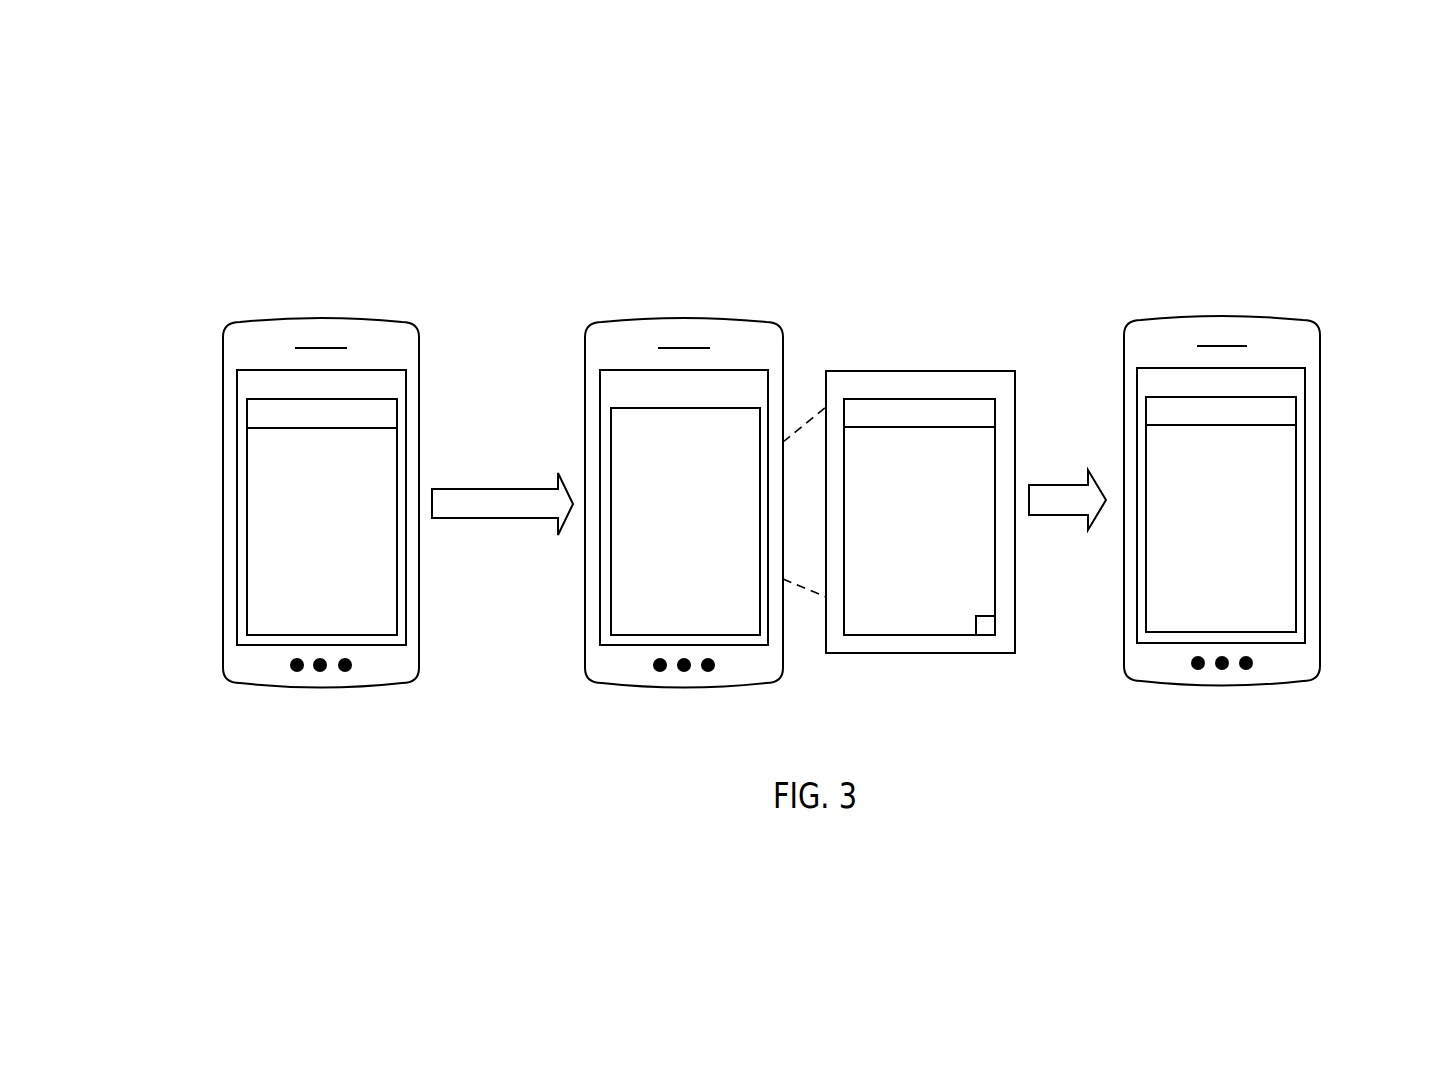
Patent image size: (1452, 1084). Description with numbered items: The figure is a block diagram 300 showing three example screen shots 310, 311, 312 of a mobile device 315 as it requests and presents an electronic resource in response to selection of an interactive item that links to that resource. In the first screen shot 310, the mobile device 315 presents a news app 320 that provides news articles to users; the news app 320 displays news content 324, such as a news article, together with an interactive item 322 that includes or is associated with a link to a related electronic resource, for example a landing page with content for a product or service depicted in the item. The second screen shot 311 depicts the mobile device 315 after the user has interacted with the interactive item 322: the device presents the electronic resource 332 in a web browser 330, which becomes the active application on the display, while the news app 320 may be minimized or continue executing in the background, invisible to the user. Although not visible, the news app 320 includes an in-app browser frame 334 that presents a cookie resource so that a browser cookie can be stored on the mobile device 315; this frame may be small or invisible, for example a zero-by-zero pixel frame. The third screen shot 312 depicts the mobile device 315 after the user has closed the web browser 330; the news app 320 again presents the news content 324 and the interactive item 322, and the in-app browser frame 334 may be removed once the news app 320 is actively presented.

The user interface flow 300 is at (252, 119).
The screen shot 310 is at (232, 304).
The screen shot 311 is at (592, 304).
The screen shot 312 is at (1127, 311).
The mobile device 315 is at (258, 688).
The news app 320 is at (226, 364).
The interactive item 322 is at (242, 413).
The news content 324 is at (255, 486).
The web browser 330 is at (590, 365).
The electronic resource 332 is at (621, 464).
The in-app browser frame 334 is at (979, 637).